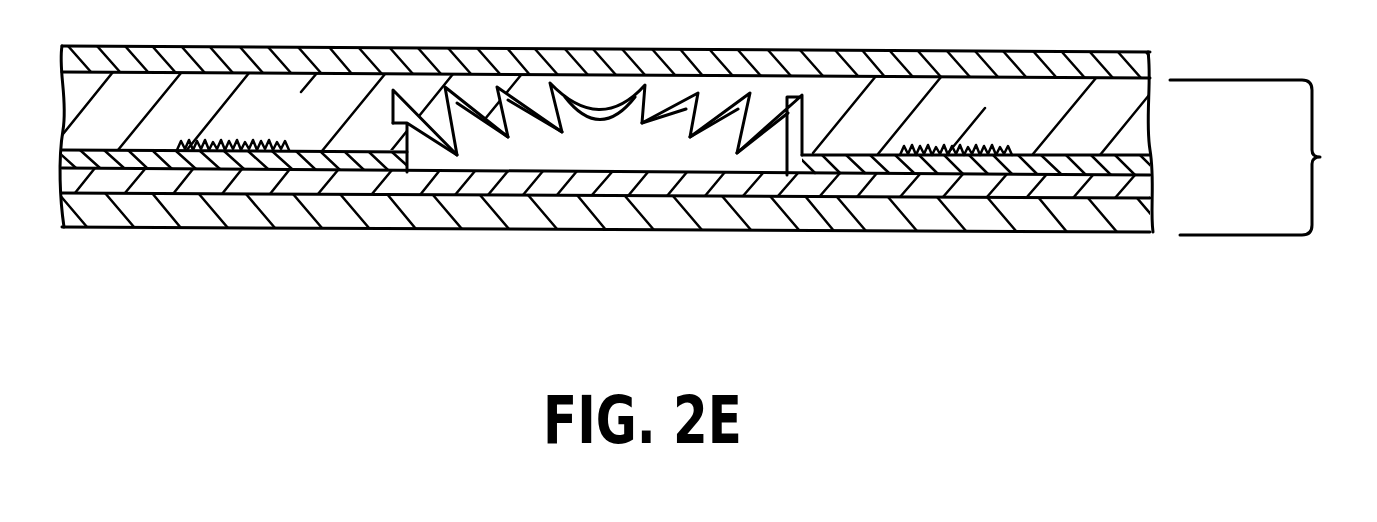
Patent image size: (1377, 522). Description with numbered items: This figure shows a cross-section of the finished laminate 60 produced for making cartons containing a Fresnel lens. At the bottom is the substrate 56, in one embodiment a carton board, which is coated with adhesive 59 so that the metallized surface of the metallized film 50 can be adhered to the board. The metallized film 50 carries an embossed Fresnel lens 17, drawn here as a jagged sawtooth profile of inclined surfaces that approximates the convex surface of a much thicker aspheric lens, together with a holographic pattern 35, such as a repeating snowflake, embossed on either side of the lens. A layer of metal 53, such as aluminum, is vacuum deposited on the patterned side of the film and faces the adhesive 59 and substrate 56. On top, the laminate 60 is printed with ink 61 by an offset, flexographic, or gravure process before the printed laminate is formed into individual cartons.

The Fresnel lens 17 is at (594, 113).
The holographic pattern 35 is at (229, 143).
The metallized film 50 is at (1152, 108).
The metal 53 is at (1153, 168).
The substrate 56 is at (1158, 227).
The adhesive 59 is at (1155, 188).
The laminate 60 is at (1268, 157).
The ink 61 is at (1148, 70).